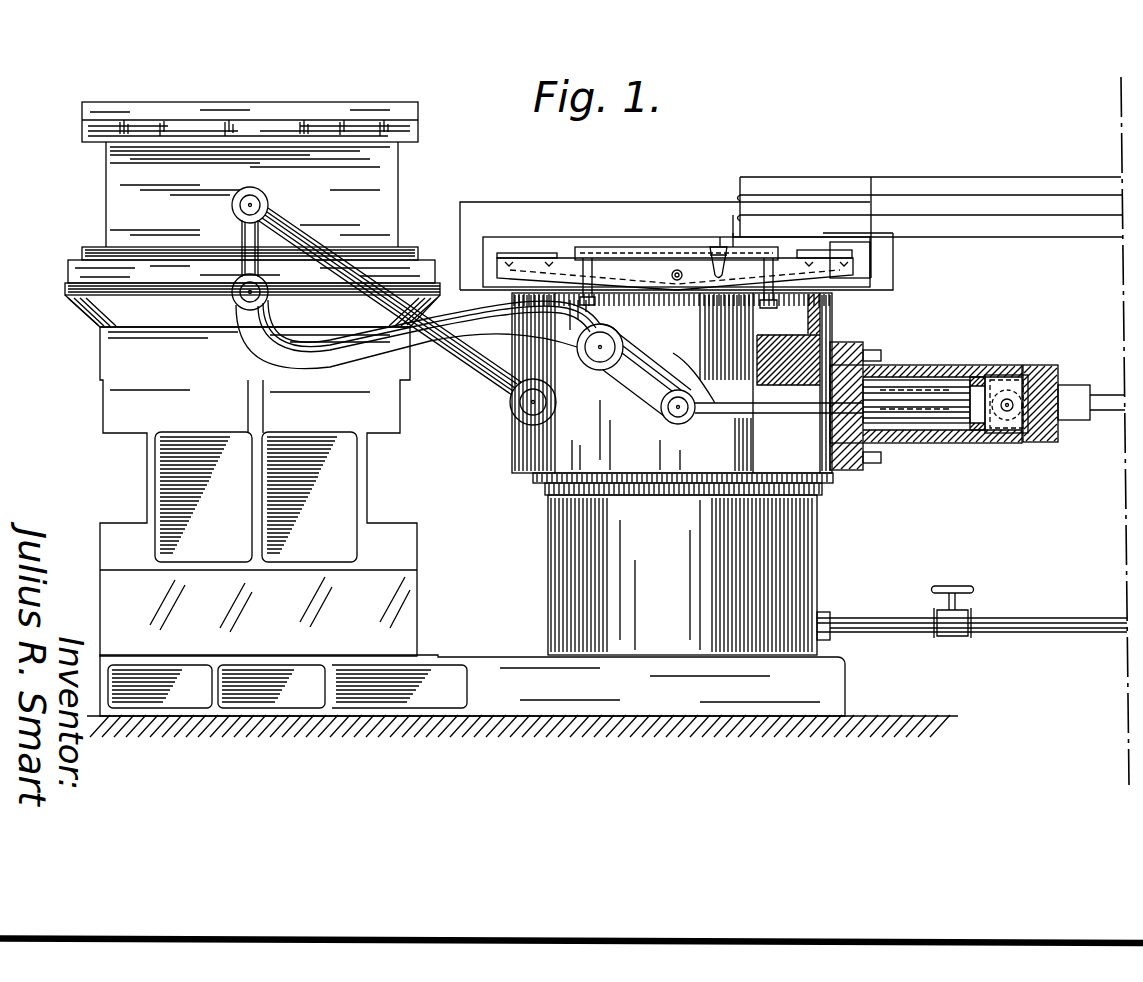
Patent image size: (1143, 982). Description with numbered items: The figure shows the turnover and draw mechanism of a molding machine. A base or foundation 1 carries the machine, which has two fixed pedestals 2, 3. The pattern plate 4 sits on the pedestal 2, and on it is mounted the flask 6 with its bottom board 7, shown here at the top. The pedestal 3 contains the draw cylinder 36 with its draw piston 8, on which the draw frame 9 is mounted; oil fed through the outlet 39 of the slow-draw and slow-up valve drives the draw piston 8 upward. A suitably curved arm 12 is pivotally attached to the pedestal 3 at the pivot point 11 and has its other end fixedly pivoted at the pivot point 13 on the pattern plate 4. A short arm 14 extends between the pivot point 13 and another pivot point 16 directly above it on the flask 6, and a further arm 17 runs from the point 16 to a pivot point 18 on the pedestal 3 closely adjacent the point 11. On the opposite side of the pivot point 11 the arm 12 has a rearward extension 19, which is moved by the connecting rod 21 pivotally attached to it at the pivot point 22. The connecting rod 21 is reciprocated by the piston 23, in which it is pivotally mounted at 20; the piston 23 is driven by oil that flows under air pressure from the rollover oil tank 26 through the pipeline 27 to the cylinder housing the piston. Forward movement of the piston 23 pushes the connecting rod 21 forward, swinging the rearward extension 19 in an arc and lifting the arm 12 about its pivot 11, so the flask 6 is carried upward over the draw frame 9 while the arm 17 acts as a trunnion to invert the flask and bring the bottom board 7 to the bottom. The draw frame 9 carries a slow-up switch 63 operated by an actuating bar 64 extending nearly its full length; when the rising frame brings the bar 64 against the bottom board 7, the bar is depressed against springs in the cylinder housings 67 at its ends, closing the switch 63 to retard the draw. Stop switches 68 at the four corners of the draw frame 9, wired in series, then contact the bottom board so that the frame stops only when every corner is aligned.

The base 1 is at (497, 660).
The fixed pedestal 2 is at (125, 420).
The fixed pedestal 3 is at (514, 458).
The pattern plate 4 is at (68, 273).
The flask 6 is at (118, 174).
The bottom board 7 is at (143, 102).
The draw piston 8 is at (707, 375).
The draw frame 9 is at (632, 256).
The pivot point 11 is at (600, 352).
The curved arm 12 is at (410, 345).
The pivot point 13 is at (248, 298).
The short arm 14 is at (244, 236).
The pivot point 16 is at (256, 204).
The arm 17 is at (300, 228).
The pivot point 18 is at (533, 402).
The rearward extension 19 is at (640, 388).
The pivotal mounting 20 is at (1020, 430).
The connecting rod 21 is at (920, 410).
The pivot point 22 is at (678, 414).
The piston 23 is at (977, 430).
The rollover oil tank 26 is at (1040, 365).
The pipeline 27 is at (1110, 394).
The draw cylinder 36 is at (572, 553).
The outlet 39 is at (1055, 630).
The slow-up switch 63 is at (716, 247).
The actuating bar 64 is at (600, 248).
The cylinder housings 67 is at (778, 300).
The stop switches 68 is at (520, 253).